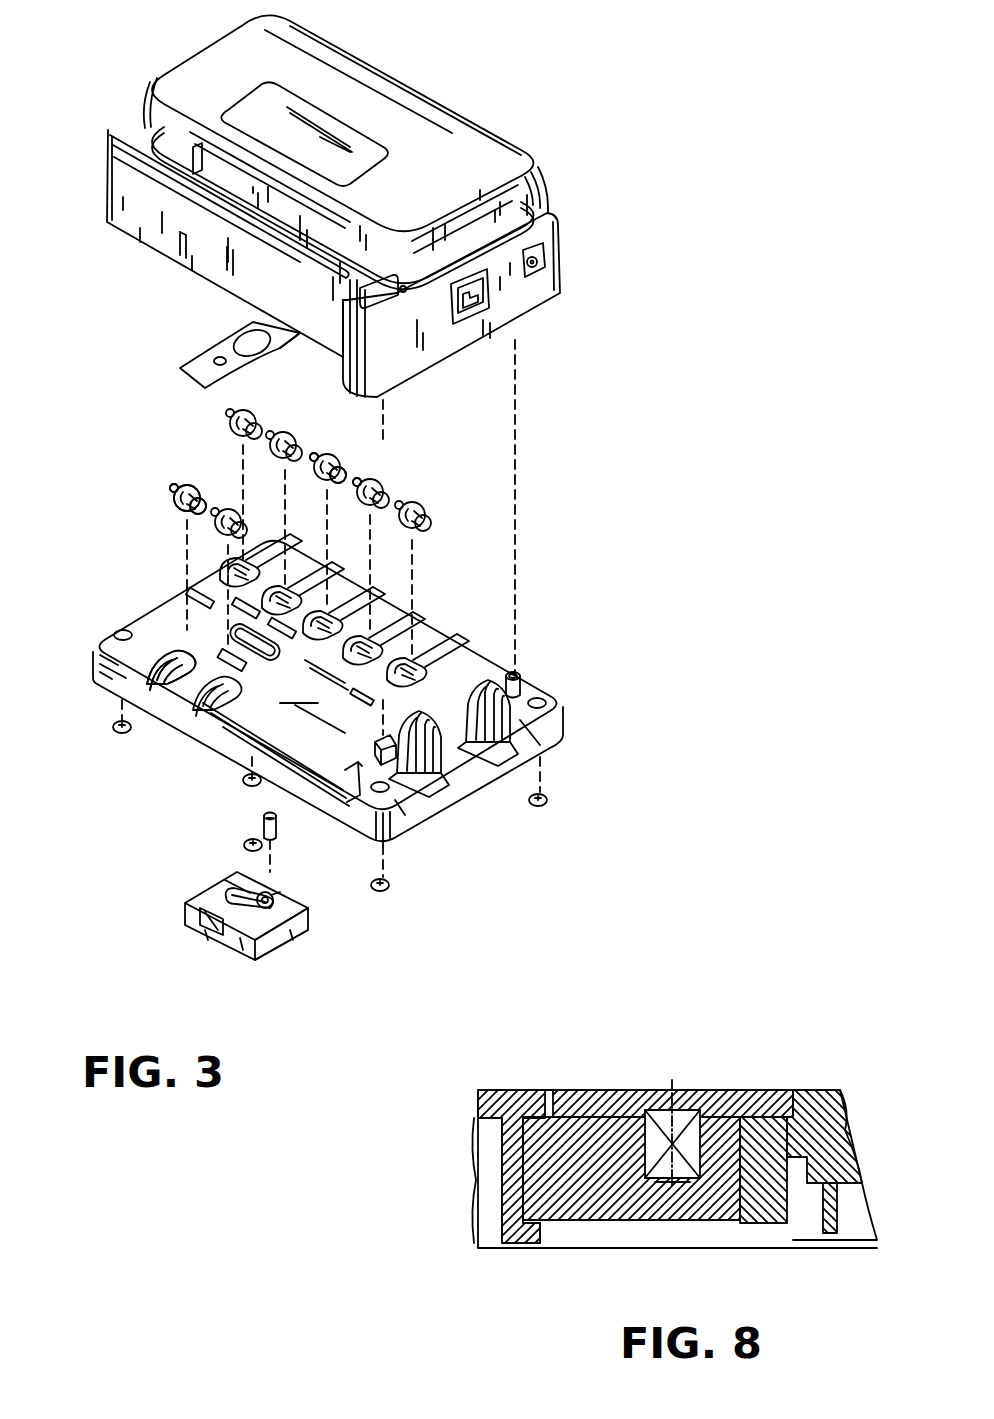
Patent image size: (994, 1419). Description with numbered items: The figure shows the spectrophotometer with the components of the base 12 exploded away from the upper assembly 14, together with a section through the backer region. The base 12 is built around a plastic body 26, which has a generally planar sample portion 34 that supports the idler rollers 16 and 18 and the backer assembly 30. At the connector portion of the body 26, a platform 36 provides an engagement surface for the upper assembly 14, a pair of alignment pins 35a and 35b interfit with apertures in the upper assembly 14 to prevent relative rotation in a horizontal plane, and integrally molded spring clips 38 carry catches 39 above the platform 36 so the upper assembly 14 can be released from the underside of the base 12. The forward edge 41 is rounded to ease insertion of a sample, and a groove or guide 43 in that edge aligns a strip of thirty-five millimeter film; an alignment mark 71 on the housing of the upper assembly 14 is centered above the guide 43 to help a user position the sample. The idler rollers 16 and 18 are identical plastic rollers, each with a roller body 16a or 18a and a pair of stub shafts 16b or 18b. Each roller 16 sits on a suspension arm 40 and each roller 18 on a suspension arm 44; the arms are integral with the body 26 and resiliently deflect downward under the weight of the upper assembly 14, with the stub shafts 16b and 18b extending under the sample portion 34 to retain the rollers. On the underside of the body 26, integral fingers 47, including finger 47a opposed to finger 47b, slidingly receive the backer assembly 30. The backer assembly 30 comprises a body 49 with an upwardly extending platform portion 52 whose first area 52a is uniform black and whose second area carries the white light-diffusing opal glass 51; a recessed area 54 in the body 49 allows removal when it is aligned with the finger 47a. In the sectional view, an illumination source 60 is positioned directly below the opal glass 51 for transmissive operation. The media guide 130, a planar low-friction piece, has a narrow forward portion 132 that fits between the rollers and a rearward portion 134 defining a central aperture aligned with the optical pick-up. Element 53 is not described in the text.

In FIG. 3, the upper assembly 14 is at (547, 158).
In FIG. 3, the alignment mark 71 is at (178, 250).
In FIG. 3, the media guide 130 is at (180, 377).
In FIG. 3, the forward portion 132 is at (193, 363).
In FIG. 3, the rearward portion 134 is at (277, 348).
In FIG. 3, the idler rollers 16 is at (420, 503).
In FIG. 3, the roller body 16a is at (340, 465).
In FIG. 3, the stub shafts 16b is at (316, 452).
In FIG. 3, the idler rollers 18 is at (217, 533).
In FIG. 3, the roller body 18a is at (188, 487).
In FIG. 3, the stub shafts 18b is at (172, 487).
In FIG. 3, the base 12 is at (568, 428).
In FIG. 3, the sample portion 34 is at (299, 690).
In FIG. 3, the suspension arms 40 is at (270, 550).
In FIG. 3, the groove or guide 43 is at (163, 650).
In FIG. 3, the suspension arms 44 is at (153, 680).
In FIG. 3, the forward edge 41 is at (237, 737).
In FIG. 3, the alignment pin 35a is at (515, 672).
In FIG. 3, the alignment pin 35b is at (360, 800).
In FIG. 3, the platform 36 is at (527, 693).
In FIG. 3, the spring clips 38 is at (462, 725).
In FIG. 3, the catches 39 is at (543, 727).
In FIG. 3, the fingers 47 is at (113, 730).
In FIG. 3, the pin 53 is at (280, 822).
In FIG. 8, the pin 53 is at (760, 1200).
In FIG. 3, the opal glass 51 is at (247, 845).
In FIG. 8, the opal glass 51 is at (660, 1095).
In FIG. 3, the platform portion 52 is at (222, 895).
In FIG. 8, the platform portion 52 is at (600, 1092).
In FIG. 3, the first area 52a is at (275, 893).
In FIG. 3, the recessed area 54 is at (207, 913).
In FIG. 3, the body 49 is at (283, 933).
In FIG. 8, the body 49 is at (600, 1218).
In FIG. 3, the backer assembly 30 is at (217, 953).
In FIG. 8, the backer assembly 30 is at (553, 1222).
In FIG. 8, the body 26 is at (505, 1095).
In FIG. 8, the finger 47a is at (483, 1225).
In FIG. 8, the finger 47b is at (830, 1185).
In FIG. 8, the illumination source 60 is at (662, 1182).